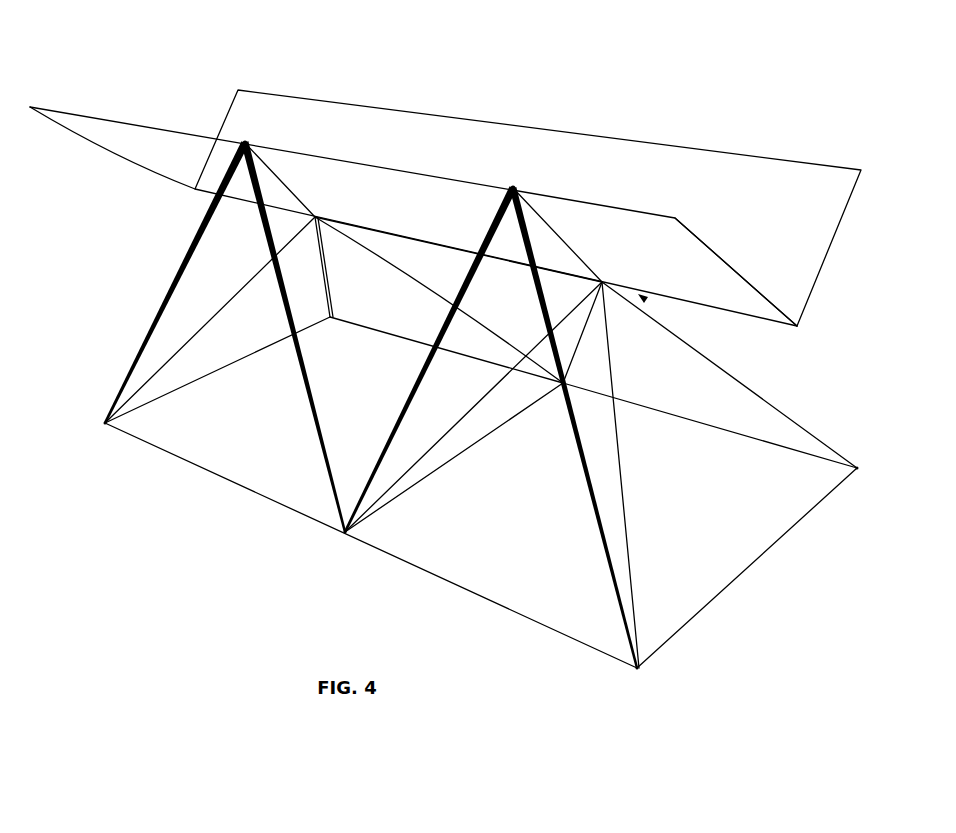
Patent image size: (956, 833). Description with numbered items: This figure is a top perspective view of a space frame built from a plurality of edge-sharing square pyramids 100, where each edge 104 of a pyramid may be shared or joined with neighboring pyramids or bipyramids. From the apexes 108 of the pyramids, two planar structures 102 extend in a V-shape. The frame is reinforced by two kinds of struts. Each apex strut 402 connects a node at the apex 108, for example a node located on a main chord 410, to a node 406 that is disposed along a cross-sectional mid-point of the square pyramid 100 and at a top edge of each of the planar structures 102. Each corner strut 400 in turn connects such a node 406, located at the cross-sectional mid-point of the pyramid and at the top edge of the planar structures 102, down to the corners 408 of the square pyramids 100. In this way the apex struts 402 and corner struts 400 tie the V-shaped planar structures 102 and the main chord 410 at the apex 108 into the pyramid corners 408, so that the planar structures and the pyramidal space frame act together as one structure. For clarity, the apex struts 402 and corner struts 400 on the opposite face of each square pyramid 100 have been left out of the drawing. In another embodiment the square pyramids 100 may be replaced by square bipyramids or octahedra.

The square pyramid 100 is at (765, 398).
The planar structure 102 is at (170, 129).
The edge 104 is at (460, 456).
The apex 108 is at (646, 299).
The corner strut 400 is at (150, 316).
The apex strut 402 is at (318, 214).
The node 406 is at (246, 140).
The corner 408 is at (104, 428).
The main chord 410 is at (742, 322).